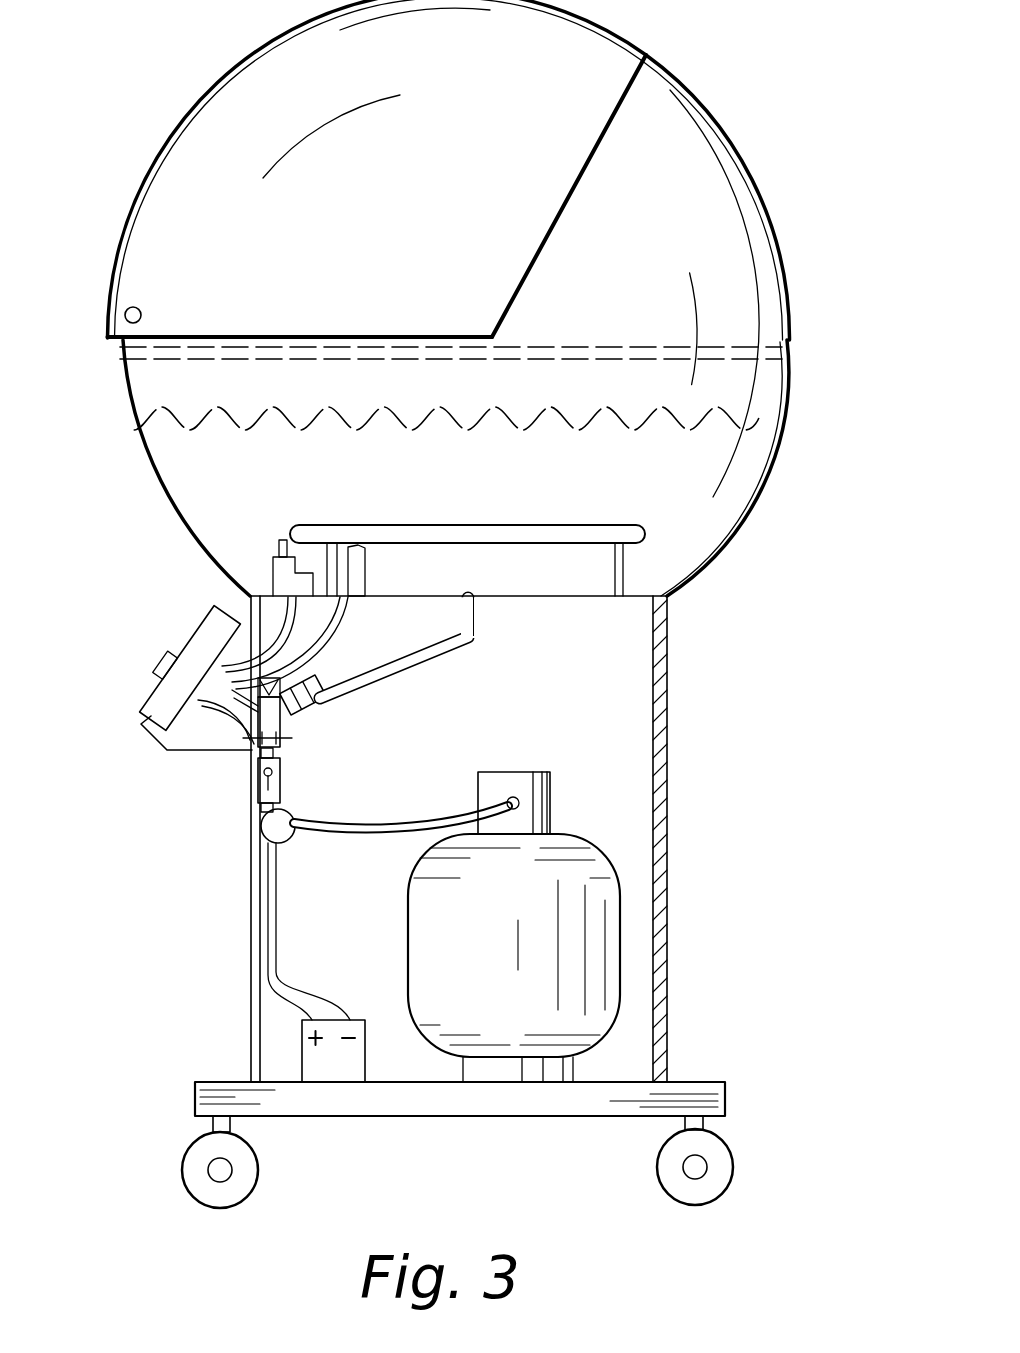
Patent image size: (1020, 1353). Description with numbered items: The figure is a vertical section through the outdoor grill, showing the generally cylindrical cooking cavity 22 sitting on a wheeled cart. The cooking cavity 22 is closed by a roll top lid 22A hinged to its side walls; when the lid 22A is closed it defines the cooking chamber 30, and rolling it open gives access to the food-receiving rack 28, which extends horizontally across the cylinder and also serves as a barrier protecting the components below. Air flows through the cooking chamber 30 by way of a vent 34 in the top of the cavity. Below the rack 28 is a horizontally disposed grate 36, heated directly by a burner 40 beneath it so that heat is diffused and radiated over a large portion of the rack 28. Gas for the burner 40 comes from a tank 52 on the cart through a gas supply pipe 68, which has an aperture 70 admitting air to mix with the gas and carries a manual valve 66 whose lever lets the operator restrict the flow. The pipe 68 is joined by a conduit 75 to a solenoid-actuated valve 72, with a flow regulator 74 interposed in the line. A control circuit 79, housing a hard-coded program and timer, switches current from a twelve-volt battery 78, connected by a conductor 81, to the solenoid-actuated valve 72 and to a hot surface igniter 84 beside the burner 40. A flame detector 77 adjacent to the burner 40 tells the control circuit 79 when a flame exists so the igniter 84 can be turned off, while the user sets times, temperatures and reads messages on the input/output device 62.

The cooking cavity 22 is at (127, 395).
The roll top lid 22A is at (140, 175).
The food-receiving rack 28 is at (727, 342).
The cooking chamber 30 is at (765, 277).
The vent 34 is at (652, 58).
The grate 36 is at (757, 412).
The burner 40 is at (560, 523).
The tank 52 is at (598, 967).
The input/output device 62 is at (180, 646).
The manual valve 66 is at (264, 771).
The gas supply pipe 68 is at (460, 655).
The aperture 70 is at (322, 682).
The solenoid-actuated valve 72 is at (283, 726).
The flow regulator 74 is at (292, 818).
The conduit 75 is at (318, 838).
The flame detector 77 is at (351, 537).
The battery 78 is at (328, 1068).
The control circuit 79 is at (168, 694).
The conductor 81 is at (268, 940).
The hot surface igniter 84 is at (272, 565).